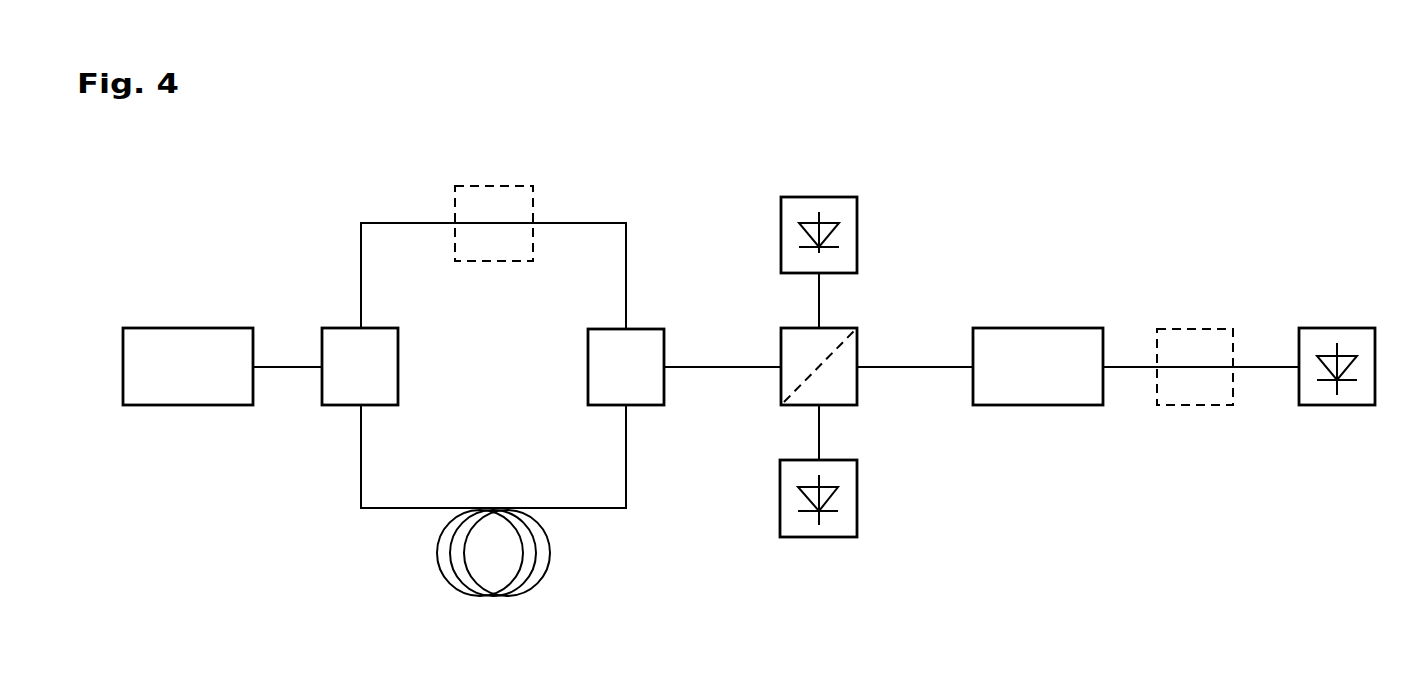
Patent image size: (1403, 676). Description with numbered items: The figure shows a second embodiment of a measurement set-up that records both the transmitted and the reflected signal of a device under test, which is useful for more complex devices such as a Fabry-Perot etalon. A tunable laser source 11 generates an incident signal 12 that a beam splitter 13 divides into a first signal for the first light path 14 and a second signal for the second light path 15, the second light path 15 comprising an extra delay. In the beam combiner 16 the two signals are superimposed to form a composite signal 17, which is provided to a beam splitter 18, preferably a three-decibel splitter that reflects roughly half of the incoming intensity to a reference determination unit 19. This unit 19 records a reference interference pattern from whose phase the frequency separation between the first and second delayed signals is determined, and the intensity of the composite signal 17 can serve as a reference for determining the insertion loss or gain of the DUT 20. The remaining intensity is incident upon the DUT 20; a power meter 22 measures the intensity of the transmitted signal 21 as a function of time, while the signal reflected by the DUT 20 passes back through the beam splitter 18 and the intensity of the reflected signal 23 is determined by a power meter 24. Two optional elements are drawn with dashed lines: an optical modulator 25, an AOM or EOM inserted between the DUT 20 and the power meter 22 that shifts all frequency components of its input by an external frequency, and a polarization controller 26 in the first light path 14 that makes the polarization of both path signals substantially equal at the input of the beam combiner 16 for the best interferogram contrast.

The tunable laser source 11 is at (181, 393).
The incident signal 12 is at (287, 362).
The beam splitter 13 is at (343, 393).
The first light path 14 is at (383, 222).
The second light path 15 is at (384, 510).
The beam combiner 16 is at (642, 390).
The composite signal 17 is at (713, 362).
The beam splitter 18 is at (847, 387).
The reference determination unit 19 is at (819, 197).
The DUT 20 is at (1039, 397).
The transmitted signal 21 is at (1128, 362).
The power meter 22 is at (1344, 397).
The reflected signal 23 is at (818, 431).
The power meter 24 is at (818, 540).
The optical modulator 25 is at (1200, 393).
The polarization controller 26 is at (497, 197).